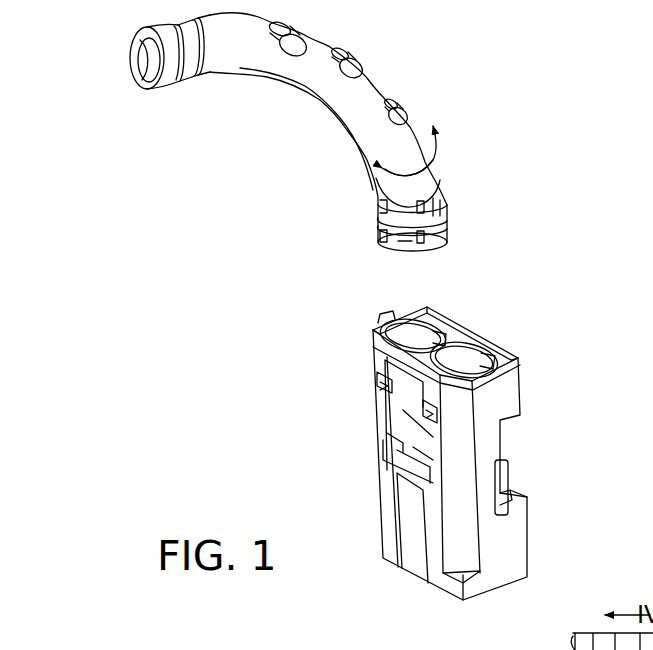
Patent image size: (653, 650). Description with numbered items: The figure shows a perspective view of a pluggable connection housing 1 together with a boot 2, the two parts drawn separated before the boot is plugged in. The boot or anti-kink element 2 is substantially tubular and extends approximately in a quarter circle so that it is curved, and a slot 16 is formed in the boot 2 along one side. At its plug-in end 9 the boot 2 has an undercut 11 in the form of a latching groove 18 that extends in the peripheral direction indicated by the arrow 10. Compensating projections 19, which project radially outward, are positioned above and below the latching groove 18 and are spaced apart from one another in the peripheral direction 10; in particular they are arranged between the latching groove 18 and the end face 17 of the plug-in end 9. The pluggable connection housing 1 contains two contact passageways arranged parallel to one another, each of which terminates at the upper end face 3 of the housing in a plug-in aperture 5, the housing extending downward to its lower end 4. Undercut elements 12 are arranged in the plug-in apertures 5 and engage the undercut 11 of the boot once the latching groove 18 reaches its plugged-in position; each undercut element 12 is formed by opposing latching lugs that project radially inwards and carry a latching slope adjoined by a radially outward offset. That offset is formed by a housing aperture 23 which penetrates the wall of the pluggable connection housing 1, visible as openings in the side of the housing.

The pluggable connection housing 1 is at (556, 372).
The boot 2 is at (375, 32).
The housing top side 3 is at (470, 319).
The housing bottom 4 is at (498, 603).
The plug-in apertures 5 is at (418, 330).
The plug-in end 9 is at (372, 228).
The peripheral direction 10 is at (437, 160).
The undercut 11 is at (453, 218).
The undercut elements 12 is at (376, 331).
The slot 16 is at (130, 55).
The end face 17 is at (398, 247).
The latching groove 18 is at (390, 222).
The compensating projections 19 is at (440, 217).
The housing aperture 23 is at (425, 405).